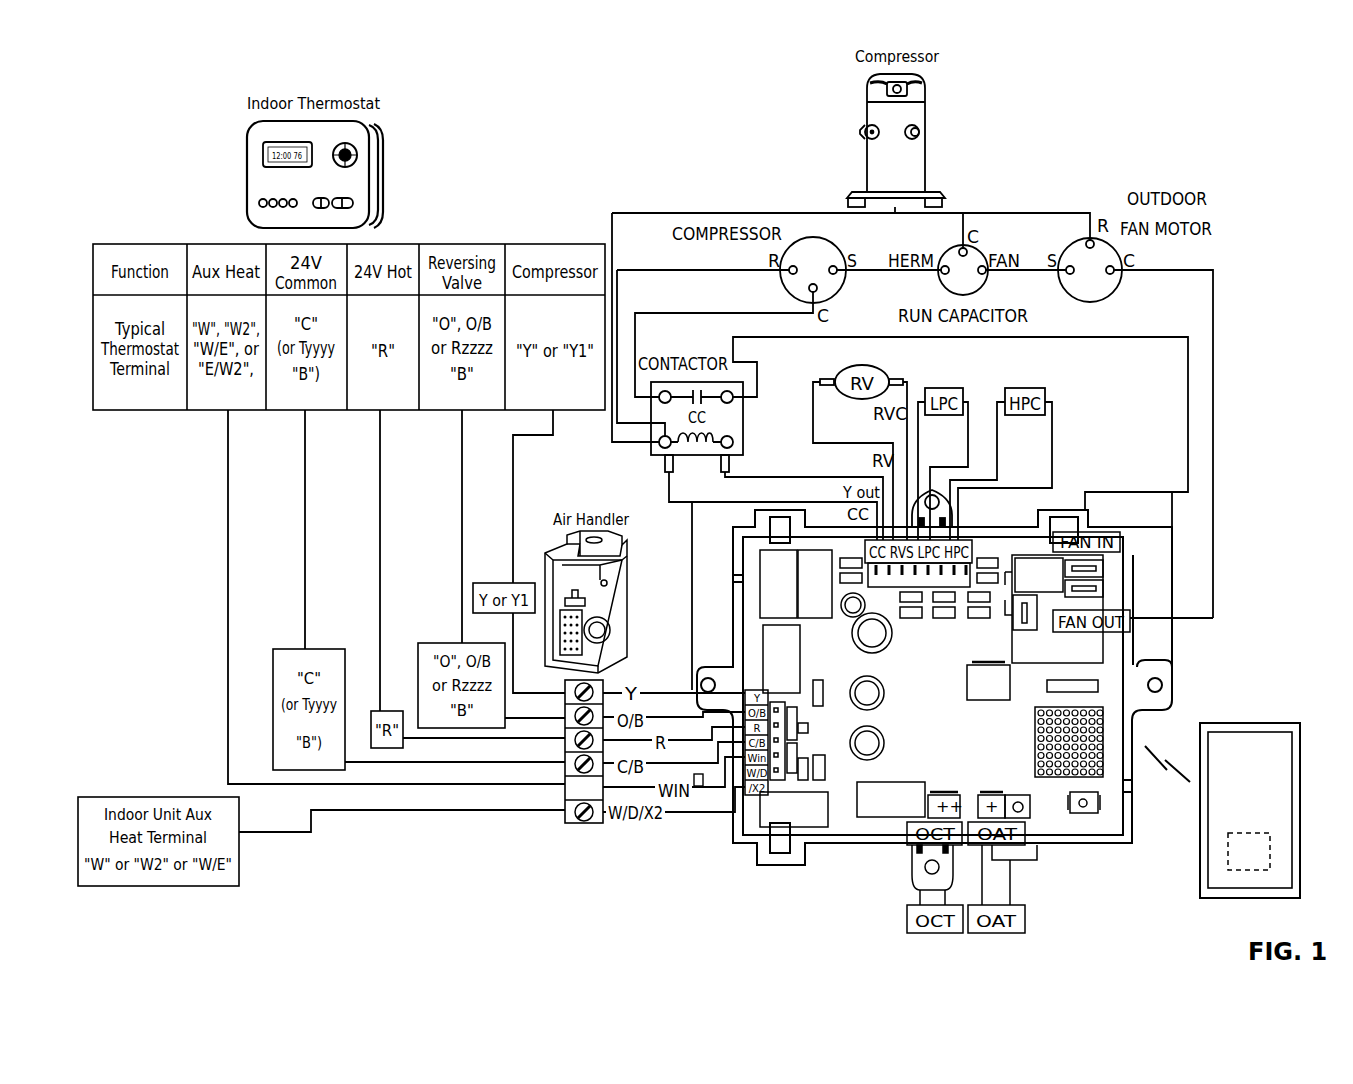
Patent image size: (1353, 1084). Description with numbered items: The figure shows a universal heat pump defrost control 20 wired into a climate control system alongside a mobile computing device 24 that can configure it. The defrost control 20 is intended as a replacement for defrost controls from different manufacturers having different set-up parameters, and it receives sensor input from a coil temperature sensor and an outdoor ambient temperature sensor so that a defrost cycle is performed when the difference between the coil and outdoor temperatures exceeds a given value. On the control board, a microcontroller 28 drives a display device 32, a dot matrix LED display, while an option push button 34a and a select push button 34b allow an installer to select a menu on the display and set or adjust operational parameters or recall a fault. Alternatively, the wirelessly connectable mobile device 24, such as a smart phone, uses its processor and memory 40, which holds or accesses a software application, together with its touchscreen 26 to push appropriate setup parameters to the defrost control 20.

The universal heat pump defrost control 20 is at (746, 871).
The mobile computing device 24 is at (1252, 722).
The touchscreen 26 is at (1250, 810).
The microcontroller 28 is at (962, 688).
The display device 32 is at (1038, 752).
The option push button 34a is at (1030, 807).
The select push button 34b is at (1085, 813).
The processor and memory 40 is at (1255, 848).